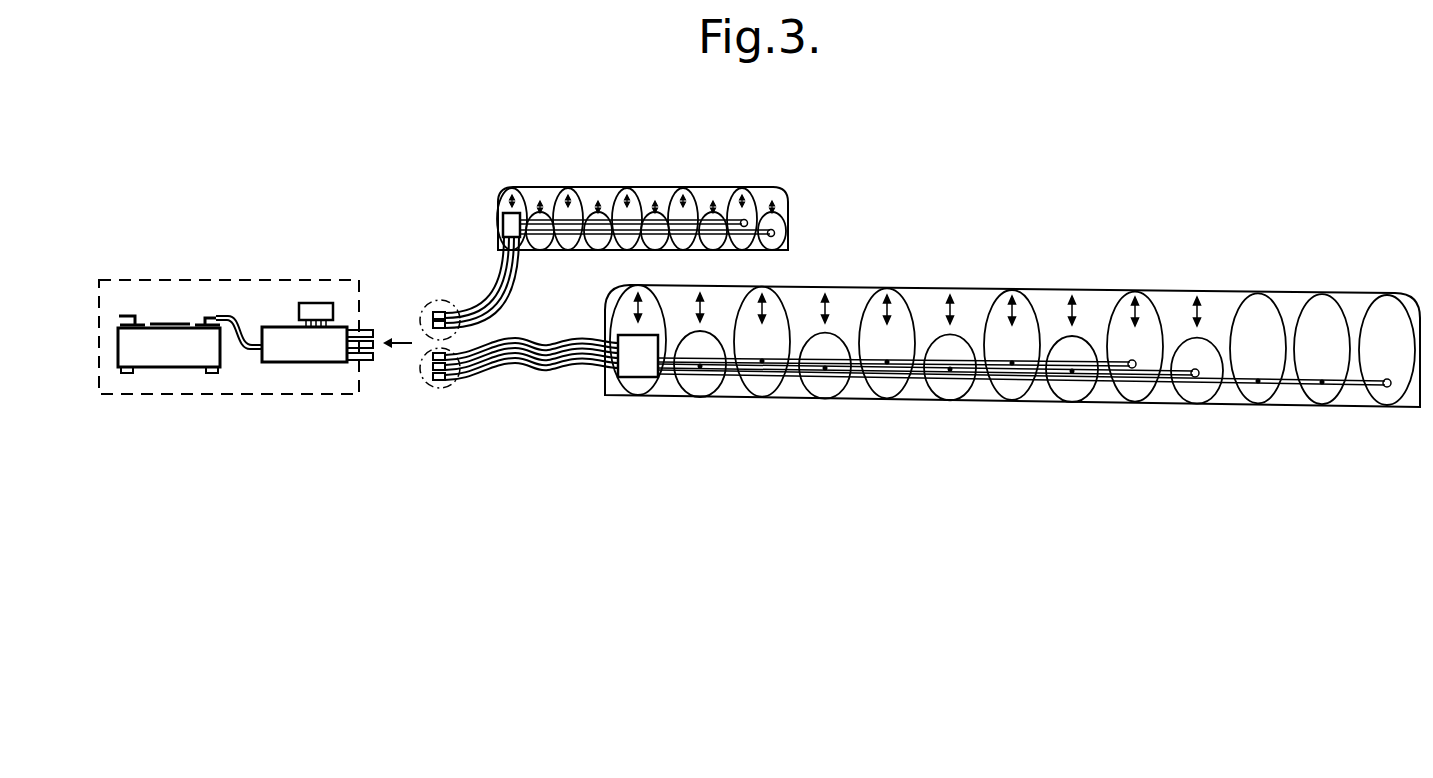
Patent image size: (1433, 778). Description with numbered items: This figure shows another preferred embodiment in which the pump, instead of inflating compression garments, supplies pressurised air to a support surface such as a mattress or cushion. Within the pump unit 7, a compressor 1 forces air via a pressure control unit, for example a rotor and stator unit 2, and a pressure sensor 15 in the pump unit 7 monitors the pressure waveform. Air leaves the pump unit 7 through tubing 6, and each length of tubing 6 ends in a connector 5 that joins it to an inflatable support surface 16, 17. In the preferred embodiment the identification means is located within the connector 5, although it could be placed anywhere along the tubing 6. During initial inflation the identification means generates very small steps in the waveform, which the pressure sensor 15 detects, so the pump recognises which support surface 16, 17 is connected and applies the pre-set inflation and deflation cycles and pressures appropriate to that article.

The compressor 1 is at (167, 353).
The rotor and stator unit 2 is at (305, 345).
The connector 5 is at (430, 305).
The tubing 6 is at (506, 289).
The pump unit 7 is at (188, 278).
The pressure sensor 15 is at (314, 306).
The support surface 16 is at (1042, 393).
The support surface 17 is at (668, 195).